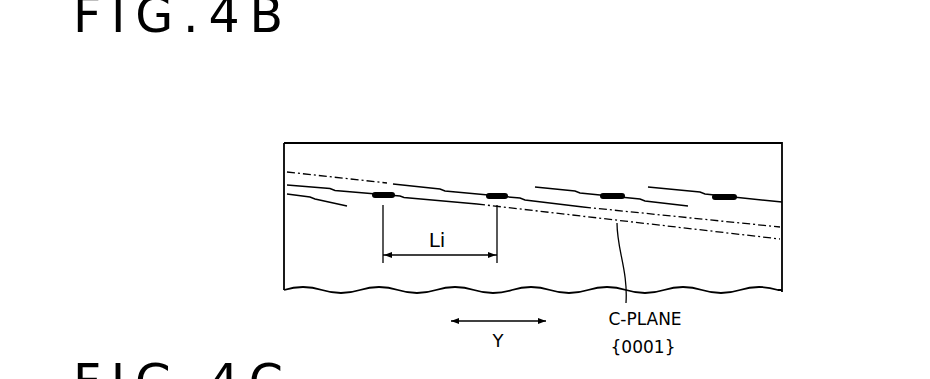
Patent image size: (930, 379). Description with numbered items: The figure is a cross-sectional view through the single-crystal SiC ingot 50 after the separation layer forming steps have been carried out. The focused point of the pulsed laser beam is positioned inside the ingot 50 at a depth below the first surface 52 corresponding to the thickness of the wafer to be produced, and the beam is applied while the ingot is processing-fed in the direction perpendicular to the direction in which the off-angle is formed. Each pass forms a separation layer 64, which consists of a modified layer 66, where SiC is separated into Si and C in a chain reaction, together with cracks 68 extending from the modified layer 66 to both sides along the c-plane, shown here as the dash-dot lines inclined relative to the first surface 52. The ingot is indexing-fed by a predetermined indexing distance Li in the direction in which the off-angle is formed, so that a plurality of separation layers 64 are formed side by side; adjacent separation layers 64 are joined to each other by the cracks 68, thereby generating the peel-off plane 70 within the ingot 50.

The single-crystal SiC ingot 50 is at (318, 139).
The first surface 52 is at (602, 143).
The separation layer 64 is at (375, 88).
The modified layer 66 is at (388, 192).
The cracks 68 is at (520, 193).
The peel-off plane 70 is at (617, 183).